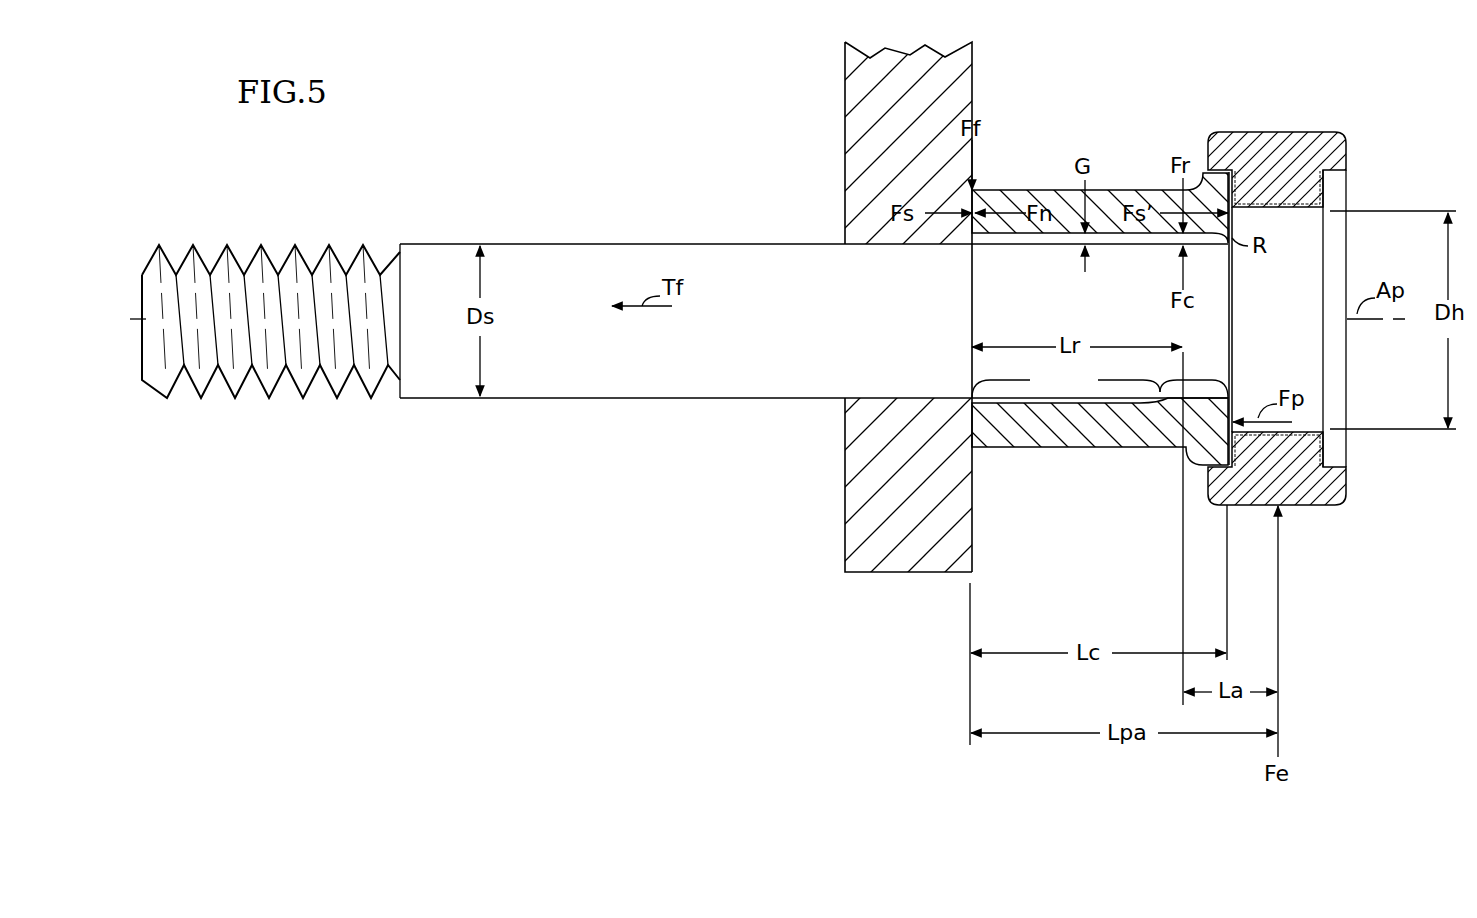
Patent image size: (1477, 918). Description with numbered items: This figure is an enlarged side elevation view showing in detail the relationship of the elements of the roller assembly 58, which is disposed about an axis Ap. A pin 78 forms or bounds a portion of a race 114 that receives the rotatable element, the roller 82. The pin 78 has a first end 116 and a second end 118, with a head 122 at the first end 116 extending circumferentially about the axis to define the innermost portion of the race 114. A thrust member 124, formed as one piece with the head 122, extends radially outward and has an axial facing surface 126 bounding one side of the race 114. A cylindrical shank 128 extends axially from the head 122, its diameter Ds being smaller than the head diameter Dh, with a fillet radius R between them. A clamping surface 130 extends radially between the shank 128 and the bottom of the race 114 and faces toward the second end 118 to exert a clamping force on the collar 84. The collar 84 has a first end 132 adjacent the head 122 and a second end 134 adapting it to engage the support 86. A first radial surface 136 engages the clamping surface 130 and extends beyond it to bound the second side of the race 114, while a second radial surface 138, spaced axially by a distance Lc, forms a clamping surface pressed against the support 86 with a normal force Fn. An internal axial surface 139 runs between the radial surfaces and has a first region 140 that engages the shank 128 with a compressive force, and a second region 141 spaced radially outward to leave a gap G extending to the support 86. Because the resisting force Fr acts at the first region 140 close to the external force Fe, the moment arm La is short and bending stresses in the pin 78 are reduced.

The roller assembly 58 is at (1097, 98).
The pin 78 is at (632, 405).
The roller 82 is at (1275, 132).
The collar 84 is at (1077, 450).
The support 86 is at (915, 62).
The race 114 is at (1337, 178).
The first end 116 is at (1291, 303).
The second end 118 is at (383, 410).
The head 122 is at (1300, 321).
The thrust member 124 is at (1335, 185).
The axial facing surface 126 is at (1330, 208).
The cylindrical shank 128 is at (828, 343).
The clamping surface 130 is at (1207, 174).
The first end 132 is at (1227, 478).
The second end 134 is at (975, 450).
The first radial surface 136 is at (1202, 452).
The second radial surface 138 is at (968, 458).
The internal axial surface 139 is at (1005, 397).
The first region 140 is at (1186, 382).
The second region 141 is at (1066, 382).